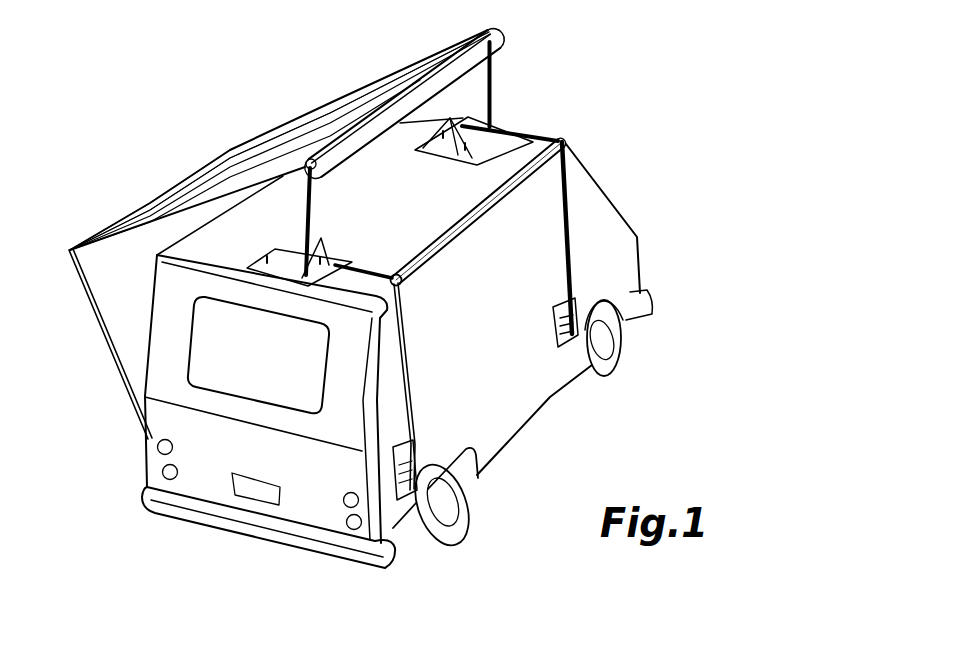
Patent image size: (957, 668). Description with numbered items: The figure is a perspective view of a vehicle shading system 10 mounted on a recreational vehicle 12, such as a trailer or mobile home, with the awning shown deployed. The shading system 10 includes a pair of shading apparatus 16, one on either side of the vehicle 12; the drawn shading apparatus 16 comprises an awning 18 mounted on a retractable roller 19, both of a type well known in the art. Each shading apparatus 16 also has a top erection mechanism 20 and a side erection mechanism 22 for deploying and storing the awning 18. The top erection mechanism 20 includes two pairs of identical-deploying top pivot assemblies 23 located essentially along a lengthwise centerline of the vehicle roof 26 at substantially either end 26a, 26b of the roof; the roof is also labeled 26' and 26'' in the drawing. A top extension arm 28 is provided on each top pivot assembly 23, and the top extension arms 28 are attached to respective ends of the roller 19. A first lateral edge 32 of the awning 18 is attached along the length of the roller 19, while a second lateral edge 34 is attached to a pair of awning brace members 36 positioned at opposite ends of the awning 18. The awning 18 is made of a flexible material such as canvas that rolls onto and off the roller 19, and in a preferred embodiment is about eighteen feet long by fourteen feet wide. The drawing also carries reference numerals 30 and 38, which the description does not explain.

The vehicle shading system 10 is at (684, 60).
The recreational vehicle 12 is at (629, 223).
The shading apparatus 16 is at (497, 30).
The awning 18 is at (360, 100).
The retractable roller 19 is at (327, 102).
The top erection mechanism 20 is at (512, 112).
The side erection mechanism 22 is at (570, 333).
The top pivot assembly 23 is at (497, 118).
The vehicle roof 26 is at (478, 211).
The end of vehicle roof 26a is at (560, 134).
The end of vehicle roof 26b is at (362, 247).
The roof rail side 26' is at (475, 228).
The roof rail far side 26'' is at (189, 233).
The top extension arm 28 is at (484, 80).
The support pole attachment 30 is at (575, 175).
The first lateral edge 32 is at (272, 127).
The second lateral edge 34 is at (230, 148).
The awning brace member 36 is at (88, 293).
The tie-down 38 is at (527, 428).